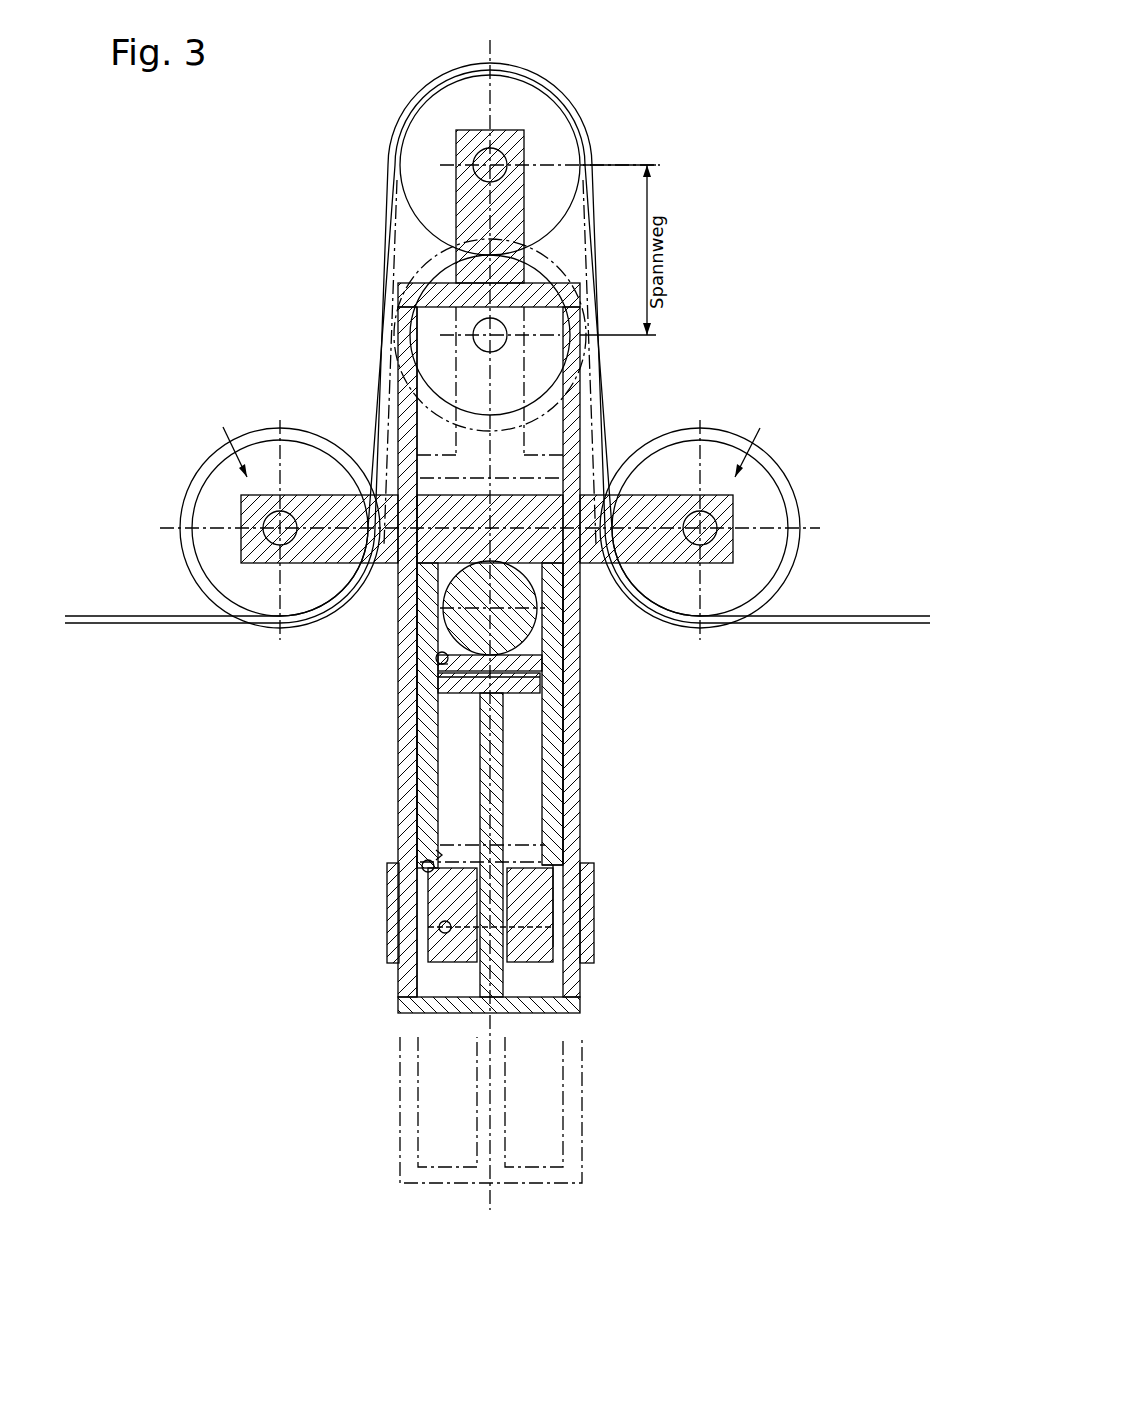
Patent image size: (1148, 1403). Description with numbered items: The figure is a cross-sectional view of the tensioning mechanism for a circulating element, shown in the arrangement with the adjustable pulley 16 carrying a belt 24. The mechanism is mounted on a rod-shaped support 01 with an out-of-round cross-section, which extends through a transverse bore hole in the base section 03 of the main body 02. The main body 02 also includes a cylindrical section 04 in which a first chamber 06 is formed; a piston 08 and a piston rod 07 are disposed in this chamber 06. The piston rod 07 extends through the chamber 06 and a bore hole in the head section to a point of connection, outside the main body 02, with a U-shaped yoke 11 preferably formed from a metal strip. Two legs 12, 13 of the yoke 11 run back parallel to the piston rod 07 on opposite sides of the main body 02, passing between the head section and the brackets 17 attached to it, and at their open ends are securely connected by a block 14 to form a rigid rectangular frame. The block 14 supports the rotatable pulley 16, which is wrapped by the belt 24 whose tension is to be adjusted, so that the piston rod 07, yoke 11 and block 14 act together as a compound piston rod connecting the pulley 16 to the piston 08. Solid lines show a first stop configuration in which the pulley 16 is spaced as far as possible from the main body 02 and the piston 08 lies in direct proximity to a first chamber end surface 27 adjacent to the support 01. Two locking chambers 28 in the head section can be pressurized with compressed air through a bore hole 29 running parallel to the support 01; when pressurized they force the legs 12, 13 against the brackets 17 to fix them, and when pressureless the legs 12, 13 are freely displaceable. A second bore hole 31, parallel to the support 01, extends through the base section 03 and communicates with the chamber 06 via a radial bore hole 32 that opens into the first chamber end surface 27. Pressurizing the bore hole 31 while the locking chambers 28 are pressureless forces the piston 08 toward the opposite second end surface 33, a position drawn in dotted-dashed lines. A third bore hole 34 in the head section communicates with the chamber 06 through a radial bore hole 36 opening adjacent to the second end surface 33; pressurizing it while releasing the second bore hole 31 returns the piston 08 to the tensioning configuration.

The support 01 is at (524, 590).
The main body 02 is at (368, 763).
The base section 03 is at (531, 540).
The cylindrical section 04 is at (553, 742).
The first chamber 06 is at (471, 769).
The piston rod 07 is at (500, 805).
The piston 08 is at (530, 683).
The U-shaped yoke 11 is at (450, 1006).
The leg 12 is at (572, 832).
The leg 13 is at (405, 800).
The block 14 is at (440, 300).
The pulley 16 is at (420, 133).
The bracket 17 is at (392, 886).
The belt 24 is at (388, 247).
The first chamber end surface 27 is at (522, 660).
The locking chamber 28 is at (428, 945).
The bore hole 29 is at (440, 930).
The second bore hole 31 is at (437, 660).
The radial bore hole 32 is at (442, 668).
The second end surface 33 is at (552, 878).
The third bore hole 34 is at (424, 865).
The radial bore hole 36 is at (437, 856).